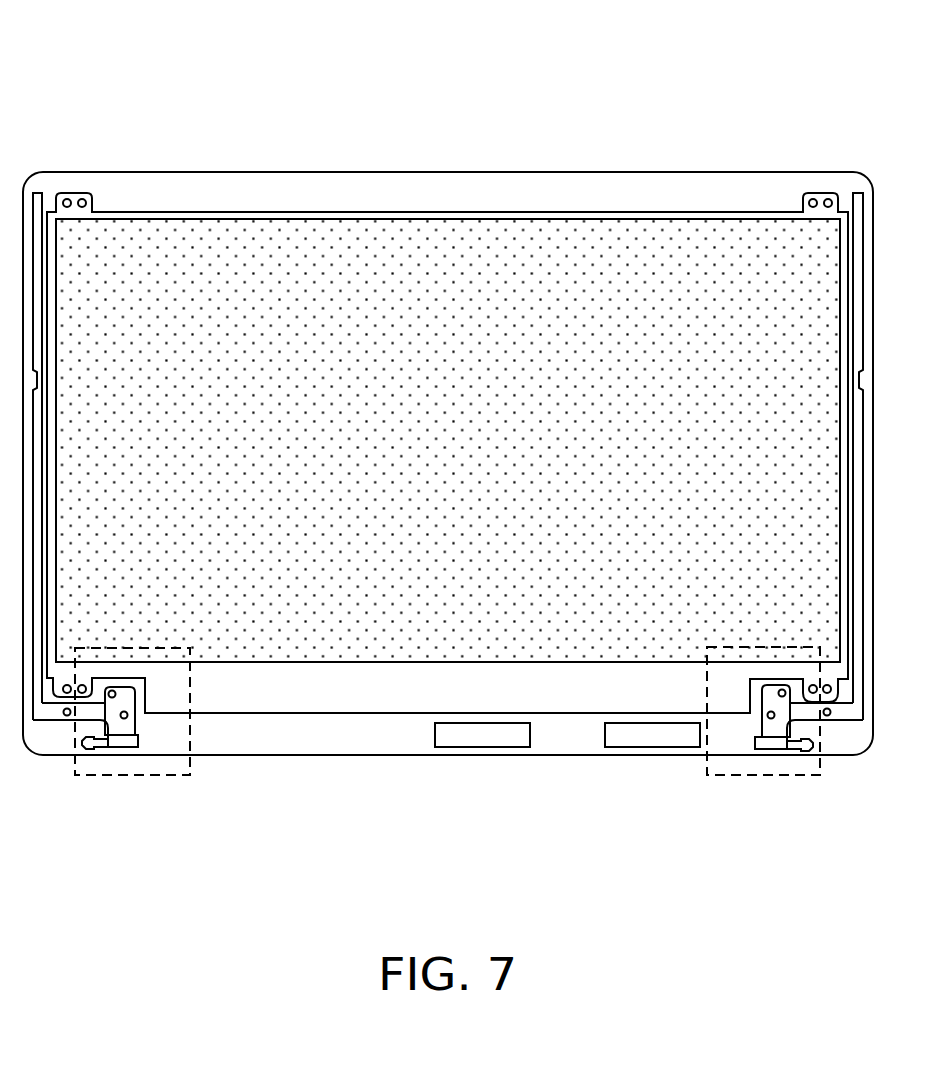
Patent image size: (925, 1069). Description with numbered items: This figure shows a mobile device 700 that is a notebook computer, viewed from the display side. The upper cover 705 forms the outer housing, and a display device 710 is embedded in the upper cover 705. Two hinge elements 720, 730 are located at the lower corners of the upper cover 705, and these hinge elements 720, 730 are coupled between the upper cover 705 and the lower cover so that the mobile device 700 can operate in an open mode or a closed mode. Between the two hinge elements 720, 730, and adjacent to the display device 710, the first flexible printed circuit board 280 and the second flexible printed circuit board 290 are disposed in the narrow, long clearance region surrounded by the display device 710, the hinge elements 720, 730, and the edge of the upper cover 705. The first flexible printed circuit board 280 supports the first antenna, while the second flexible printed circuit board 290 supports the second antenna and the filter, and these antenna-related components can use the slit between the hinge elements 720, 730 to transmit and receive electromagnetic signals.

The mobile device 700 is at (78, 49).
The upper cover 705 is at (295, 172).
The display device 710 is at (622, 255).
The hinge element 720 is at (763, 775).
The hinge element 730 is at (133, 775).
The first flexible printed circuit board 280 is at (655, 748).
The second flexible printed circuit board 290 is at (483, 748).